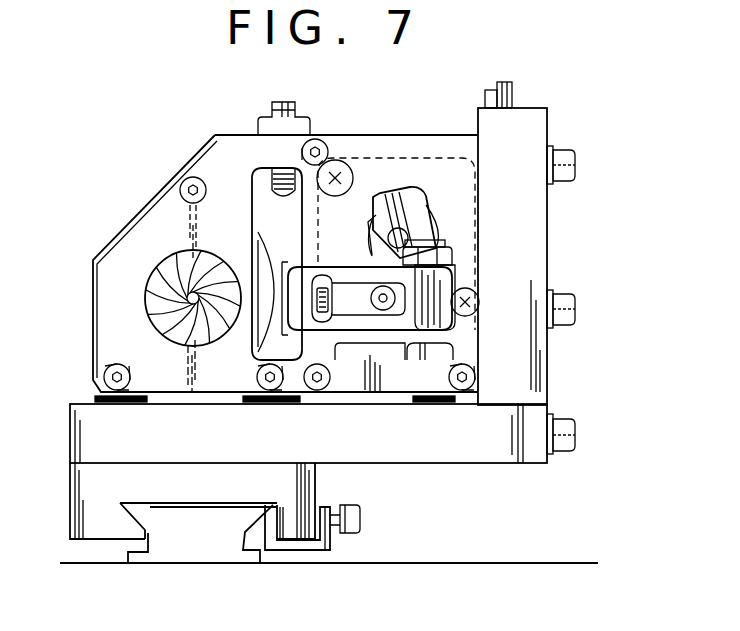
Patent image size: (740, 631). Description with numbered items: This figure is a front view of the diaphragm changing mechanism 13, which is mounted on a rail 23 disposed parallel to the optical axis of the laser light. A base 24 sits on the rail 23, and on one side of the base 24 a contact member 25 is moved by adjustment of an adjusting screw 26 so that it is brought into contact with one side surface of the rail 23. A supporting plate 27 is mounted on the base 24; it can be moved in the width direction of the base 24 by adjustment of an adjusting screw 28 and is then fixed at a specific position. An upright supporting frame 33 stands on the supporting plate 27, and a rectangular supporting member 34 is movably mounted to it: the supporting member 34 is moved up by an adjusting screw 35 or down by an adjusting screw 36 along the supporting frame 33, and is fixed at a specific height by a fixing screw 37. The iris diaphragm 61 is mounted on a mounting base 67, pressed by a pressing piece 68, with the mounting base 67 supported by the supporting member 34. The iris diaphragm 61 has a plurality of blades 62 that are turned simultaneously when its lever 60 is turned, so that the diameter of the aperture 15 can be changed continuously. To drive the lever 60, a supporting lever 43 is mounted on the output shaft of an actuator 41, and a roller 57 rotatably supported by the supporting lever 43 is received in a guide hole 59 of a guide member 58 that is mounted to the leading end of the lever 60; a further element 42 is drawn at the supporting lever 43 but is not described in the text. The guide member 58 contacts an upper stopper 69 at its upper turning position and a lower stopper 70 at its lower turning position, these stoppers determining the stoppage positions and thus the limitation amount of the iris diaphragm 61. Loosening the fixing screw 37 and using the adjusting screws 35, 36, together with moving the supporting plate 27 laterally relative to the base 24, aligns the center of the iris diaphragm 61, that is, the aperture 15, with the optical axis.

The diaphragm changing mechanism 13 is at (155, 148).
The aperture 15 is at (195, 330).
The rail 23 is at (193, 553).
The base 24 is at (93, 479).
The contact member 25 is at (272, 546).
The adjusting screw 26 is at (362, 520).
The supporting plate 27 is at (82, 426).
The adjusting screw 28 is at (577, 437).
The supporting frame 33 is at (536, 234).
The supporting member 34 is at (370, 147).
The adjusting screw 35 is at (512, 99).
The adjusting screw 36 is at (490, 91).
The fixing screw 37 is at (577, 160).
The actuator 41 is at (418, 158).
The pivot pin 42 is at (402, 238).
The supporting lever 43 is at (384, 258).
The roller 57 is at (385, 310).
The guide member 58 is at (433, 284).
The guide hole 59 is at (347, 305).
The lever 60 is at (313, 292).
The iris diaphragm 61 is at (160, 242).
The blades 62 is at (150, 268).
The mounting base 67 is at (210, 152).
The pressing piece 68 is at (117, 289).
The stopper 69 is at (273, 177).
The stopper 70 is at (455, 353).